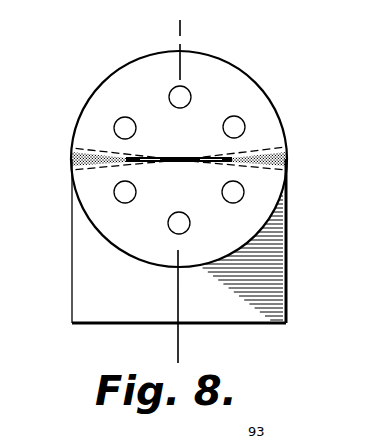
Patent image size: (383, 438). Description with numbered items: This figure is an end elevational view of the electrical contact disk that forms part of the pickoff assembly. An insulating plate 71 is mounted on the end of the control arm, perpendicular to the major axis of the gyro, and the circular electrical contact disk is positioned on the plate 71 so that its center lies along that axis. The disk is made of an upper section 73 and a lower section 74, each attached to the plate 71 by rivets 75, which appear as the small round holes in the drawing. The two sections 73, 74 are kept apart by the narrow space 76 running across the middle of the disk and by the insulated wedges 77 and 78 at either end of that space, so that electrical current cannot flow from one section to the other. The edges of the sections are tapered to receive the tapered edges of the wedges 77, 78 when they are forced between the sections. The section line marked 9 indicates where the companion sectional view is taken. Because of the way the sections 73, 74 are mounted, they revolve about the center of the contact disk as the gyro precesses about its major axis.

The insulating plate 71 is at (83, 296).
The upper section 73 is at (234, 80).
The lower section 74 is at (257, 199).
The rivets 75 is at (234, 126).
The space 76 is at (177, 154).
The insulated wedge 77 is at (286, 159).
The insulated wedge 78 is at (82, 158).
The section line 9- 9 is at (195, 28).